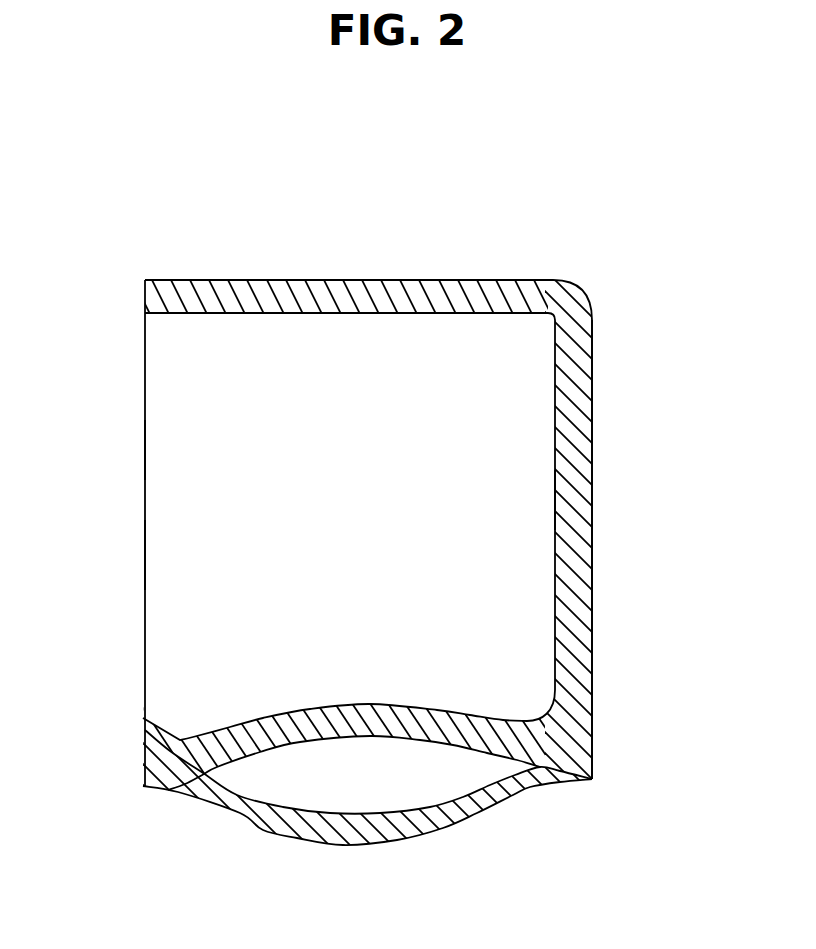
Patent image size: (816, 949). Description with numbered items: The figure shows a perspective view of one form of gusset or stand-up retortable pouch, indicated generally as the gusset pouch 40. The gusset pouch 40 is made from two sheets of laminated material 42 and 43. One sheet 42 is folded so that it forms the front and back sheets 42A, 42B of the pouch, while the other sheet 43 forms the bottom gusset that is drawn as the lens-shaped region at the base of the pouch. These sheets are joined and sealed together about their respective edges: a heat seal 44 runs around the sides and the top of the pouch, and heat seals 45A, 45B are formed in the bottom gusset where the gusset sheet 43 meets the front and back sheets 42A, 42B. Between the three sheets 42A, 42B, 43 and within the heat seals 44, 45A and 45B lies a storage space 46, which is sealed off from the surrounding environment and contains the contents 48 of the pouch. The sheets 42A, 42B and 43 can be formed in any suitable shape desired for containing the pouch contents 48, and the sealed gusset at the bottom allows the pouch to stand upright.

The gusset pouch 40 is at (207, 262).
The sheet of laminated material 42 is at (145, 370).
The front sheet 42A is at (190, 450).
The back sheet 42B is at (227, 568).
The heat seal 44 is at (570, 428).
The storage space 46 is at (540, 572).
The contents 48 is at (478, 516).
The sheet of laminated material 43 is at (327, 785).
The heat seal 45A is at (440, 737).
The heat seal 45B is at (380, 830).